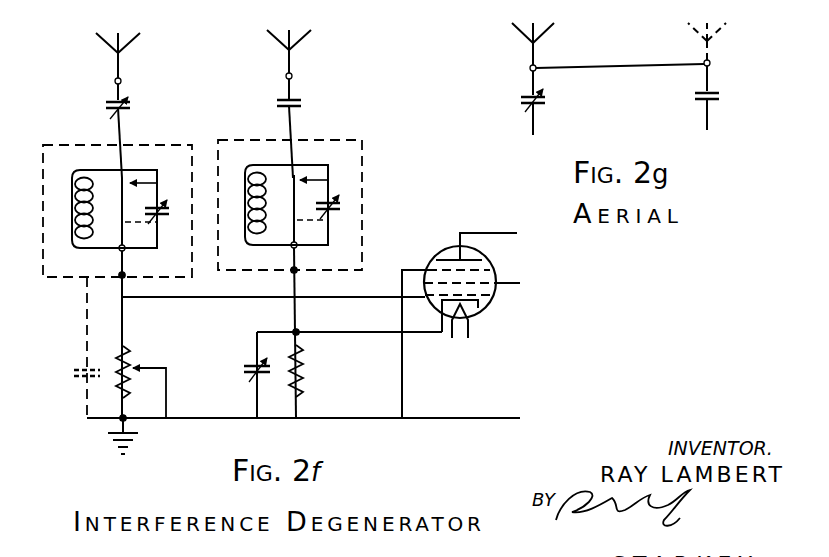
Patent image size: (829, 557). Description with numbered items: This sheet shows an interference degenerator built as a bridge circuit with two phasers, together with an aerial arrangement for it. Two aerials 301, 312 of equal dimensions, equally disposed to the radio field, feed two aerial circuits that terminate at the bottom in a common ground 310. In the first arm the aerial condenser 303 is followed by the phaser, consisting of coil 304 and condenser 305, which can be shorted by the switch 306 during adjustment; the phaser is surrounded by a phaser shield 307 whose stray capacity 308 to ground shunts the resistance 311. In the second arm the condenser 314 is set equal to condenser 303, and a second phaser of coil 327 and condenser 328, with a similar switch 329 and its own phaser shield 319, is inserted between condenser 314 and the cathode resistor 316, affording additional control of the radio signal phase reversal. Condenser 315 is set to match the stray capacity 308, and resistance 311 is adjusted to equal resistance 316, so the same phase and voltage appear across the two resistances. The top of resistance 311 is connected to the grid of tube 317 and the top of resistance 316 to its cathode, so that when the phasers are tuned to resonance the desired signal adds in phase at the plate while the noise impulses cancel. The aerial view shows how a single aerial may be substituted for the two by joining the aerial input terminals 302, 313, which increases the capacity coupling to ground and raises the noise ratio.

In FIG. 2F, the aerial 301 is at (102, 47).
In FIG. 2G, the aerial 301 is at (518, 33).
In FIG. 2F, the aerial input terminal 302 is at (110, 84).
In FIG. 2G, the aerial input terminal 302 is at (527, 71).
In FIG. 2F, the condenser 303 is at (112, 113).
In FIG. 2G, the condenser 303 is at (522, 100).
In FIG. 2F, the coil 304 is at (117, 211).
In FIG. 2F, the condenser 305 is at (155, 210).
In FIG. 2F, the switch 306 is at (126, 183).
In FIG. 2F, the phaser shield 307 is at (191, 276).
In FIG. 2F, the stray capacity 308 is at (72, 372).
In FIG. 2F, the common ground 310 is at (108, 441).
In FIG. 2F, the resistance 311 is at (135, 364).
In FIG. 2F, the aerial 312 is at (282, 52).
In FIG. 2G, the aerial 312 is at (690, 30).
In FIG. 2F, the aerial input terminal 313 is at (283, 84).
In FIG. 2G, the aerial input terminal 313 is at (710, 67).
In FIG. 2F, the condenser 314 is at (284, 110).
In FIG. 2G, the condenser 314 is at (694, 96).
In FIG. 2F, the condenser 315 is at (243, 373).
In FIG. 2F, the resistance 316 is at (307, 372).
In FIG. 2F, the tube 317 is at (435, 257).
In FIG. 2F, the phaser shield 319 is at (276, 277).
In FIG. 2F, the coil 327 is at (310, 205).
In FIG. 2F, the condenser 328 is at (340, 204).
In FIG. 2F, the switch 329 is at (297, 178).